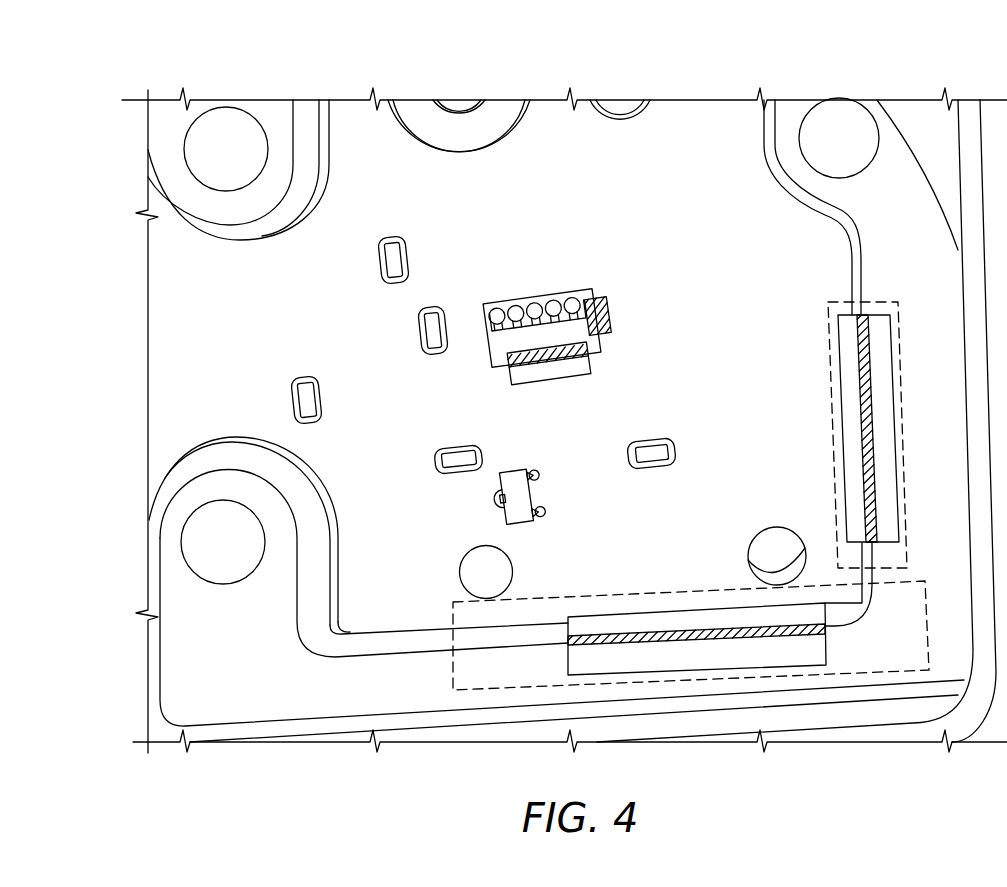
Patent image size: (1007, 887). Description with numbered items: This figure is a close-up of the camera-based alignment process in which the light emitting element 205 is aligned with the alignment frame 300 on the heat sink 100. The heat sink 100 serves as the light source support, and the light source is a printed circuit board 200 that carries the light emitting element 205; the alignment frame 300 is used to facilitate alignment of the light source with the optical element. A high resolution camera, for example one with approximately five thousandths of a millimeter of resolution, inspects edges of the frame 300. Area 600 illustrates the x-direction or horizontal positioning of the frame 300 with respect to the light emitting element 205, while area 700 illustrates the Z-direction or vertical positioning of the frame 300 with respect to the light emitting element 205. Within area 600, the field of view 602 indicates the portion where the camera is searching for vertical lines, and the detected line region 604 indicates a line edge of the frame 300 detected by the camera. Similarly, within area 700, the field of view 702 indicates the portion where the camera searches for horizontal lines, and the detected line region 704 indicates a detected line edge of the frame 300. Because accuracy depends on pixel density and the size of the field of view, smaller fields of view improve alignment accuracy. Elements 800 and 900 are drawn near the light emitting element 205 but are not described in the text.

The heat sink 100 is at (304, 115).
The printed circuit board 200 is at (422, 220).
The light emitting element 205 is at (563, 295).
The alignment frame 300 is at (882, 226).
The area 600 is at (822, 294).
The field of view 602 is at (838, 352).
The detected line region 604 is at (862, 443).
The area 700 is at (867, 672).
The field of view 702 is at (690, 668).
The detected line region 704 is at (612, 636).
The connector terminal 800 is at (605, 300).
The connector base 900 is at (570, 384).